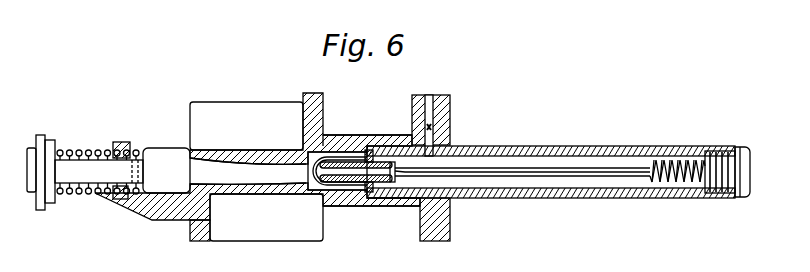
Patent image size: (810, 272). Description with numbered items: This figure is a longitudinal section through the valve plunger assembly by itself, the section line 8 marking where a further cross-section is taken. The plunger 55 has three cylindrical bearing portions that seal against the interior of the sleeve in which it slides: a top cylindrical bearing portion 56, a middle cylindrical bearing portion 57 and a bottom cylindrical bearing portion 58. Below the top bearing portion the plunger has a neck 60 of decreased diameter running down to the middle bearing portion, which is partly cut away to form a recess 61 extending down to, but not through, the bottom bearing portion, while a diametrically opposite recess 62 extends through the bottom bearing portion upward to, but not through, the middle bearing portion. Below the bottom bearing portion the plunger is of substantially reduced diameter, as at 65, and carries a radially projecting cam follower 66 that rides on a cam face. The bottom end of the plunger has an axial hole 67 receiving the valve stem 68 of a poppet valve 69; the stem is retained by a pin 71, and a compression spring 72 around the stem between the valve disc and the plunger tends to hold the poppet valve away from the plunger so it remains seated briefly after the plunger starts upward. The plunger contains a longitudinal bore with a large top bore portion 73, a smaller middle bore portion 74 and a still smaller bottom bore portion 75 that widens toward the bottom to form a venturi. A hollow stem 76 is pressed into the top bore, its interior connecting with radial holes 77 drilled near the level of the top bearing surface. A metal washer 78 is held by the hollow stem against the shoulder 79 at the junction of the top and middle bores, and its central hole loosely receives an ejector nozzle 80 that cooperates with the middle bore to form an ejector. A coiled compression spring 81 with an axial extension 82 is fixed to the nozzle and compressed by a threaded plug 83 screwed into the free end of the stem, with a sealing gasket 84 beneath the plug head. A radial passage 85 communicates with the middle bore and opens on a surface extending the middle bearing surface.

The section line 8- 8 is at (222, 90).
The plunger 55 is at (366, 207).
The top cylindrical bearing portion 56 is at (440, 243).
The middle cylindrical bearing portion 57 is at (311, 96).
The bottom cylindrical bearing portion 58 is at (190, 244).
The neck 60 is at (345, 135).
The recess 61 is at (305, 233).
The recess 62 is at (209, 110).
The reduced diameter portion 65 is at (162, 216).
The cam follower 66 is at (92, 176).
The axial hole 67 is at (125, 200).
The valve stem 68 is at (144, 175).
The poppet valve 69 is at (44, 140).
The pin 71 is at (128, 148).
The compression spring 72 is at (70, 193).
The top bore portion 73 is at (405, 208).
The middle bore portion 74 is at (337, 196).
The bottom bore portion 75 is at (265, 176).
The hollow stem 76 is at (538, 199).
The radial holes 77 is at (434, 130).
The metal washer 78 is at (370, 150).
The shoulder 79 is at (355, 137).
The ejector nozzle 80 is at (315, 190).
The coiled compression spring 81 is at (658, 178).
The axial extension 82 is at (584, 170).
The threaded plug 83 is at (746, 172).
The sealing gasket 84 is at (733, 196).
The radial passage 85 is at (333, 158).